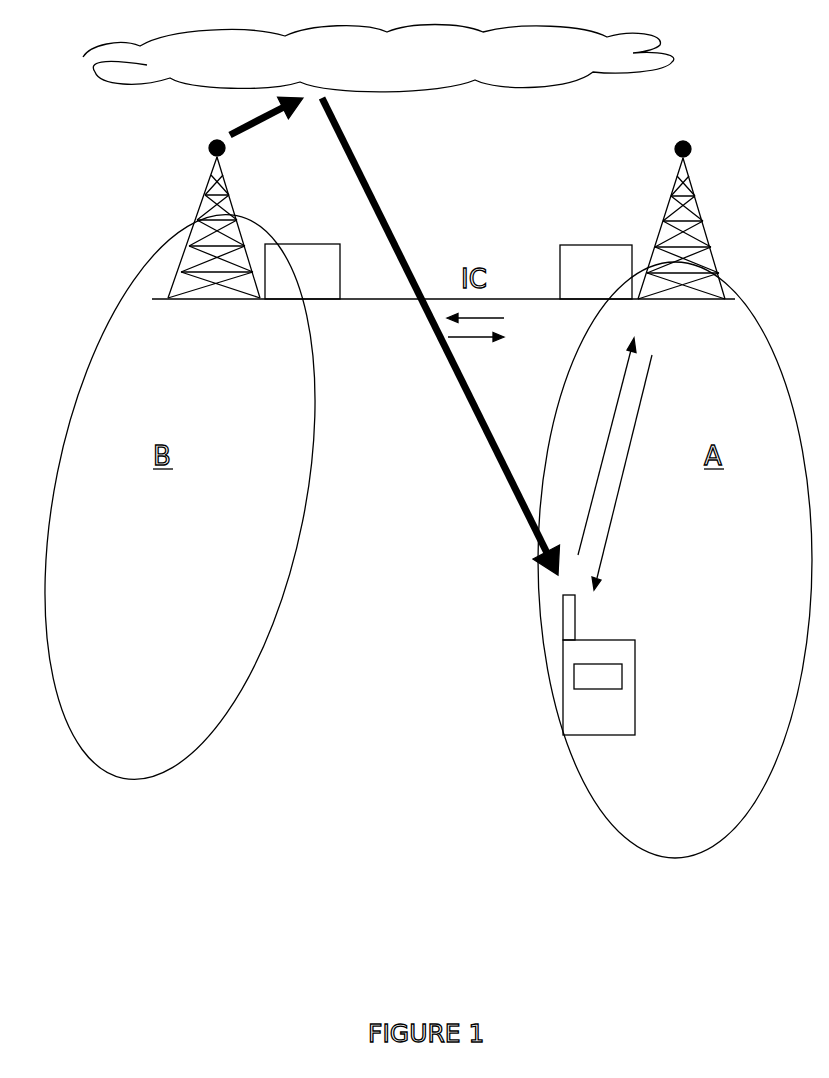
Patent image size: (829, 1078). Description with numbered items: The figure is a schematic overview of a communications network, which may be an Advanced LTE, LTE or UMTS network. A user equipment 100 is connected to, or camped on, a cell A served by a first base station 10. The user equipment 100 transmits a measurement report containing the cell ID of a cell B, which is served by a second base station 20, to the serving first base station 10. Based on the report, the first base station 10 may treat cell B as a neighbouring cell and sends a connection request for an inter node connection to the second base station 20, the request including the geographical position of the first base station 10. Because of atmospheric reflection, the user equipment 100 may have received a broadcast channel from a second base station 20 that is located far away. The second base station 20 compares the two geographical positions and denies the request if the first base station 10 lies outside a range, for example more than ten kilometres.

The first base station 10 is at (610, 285).
The second base station 20 is at (317, 285).
The user equipment 100 is at (578, 711).